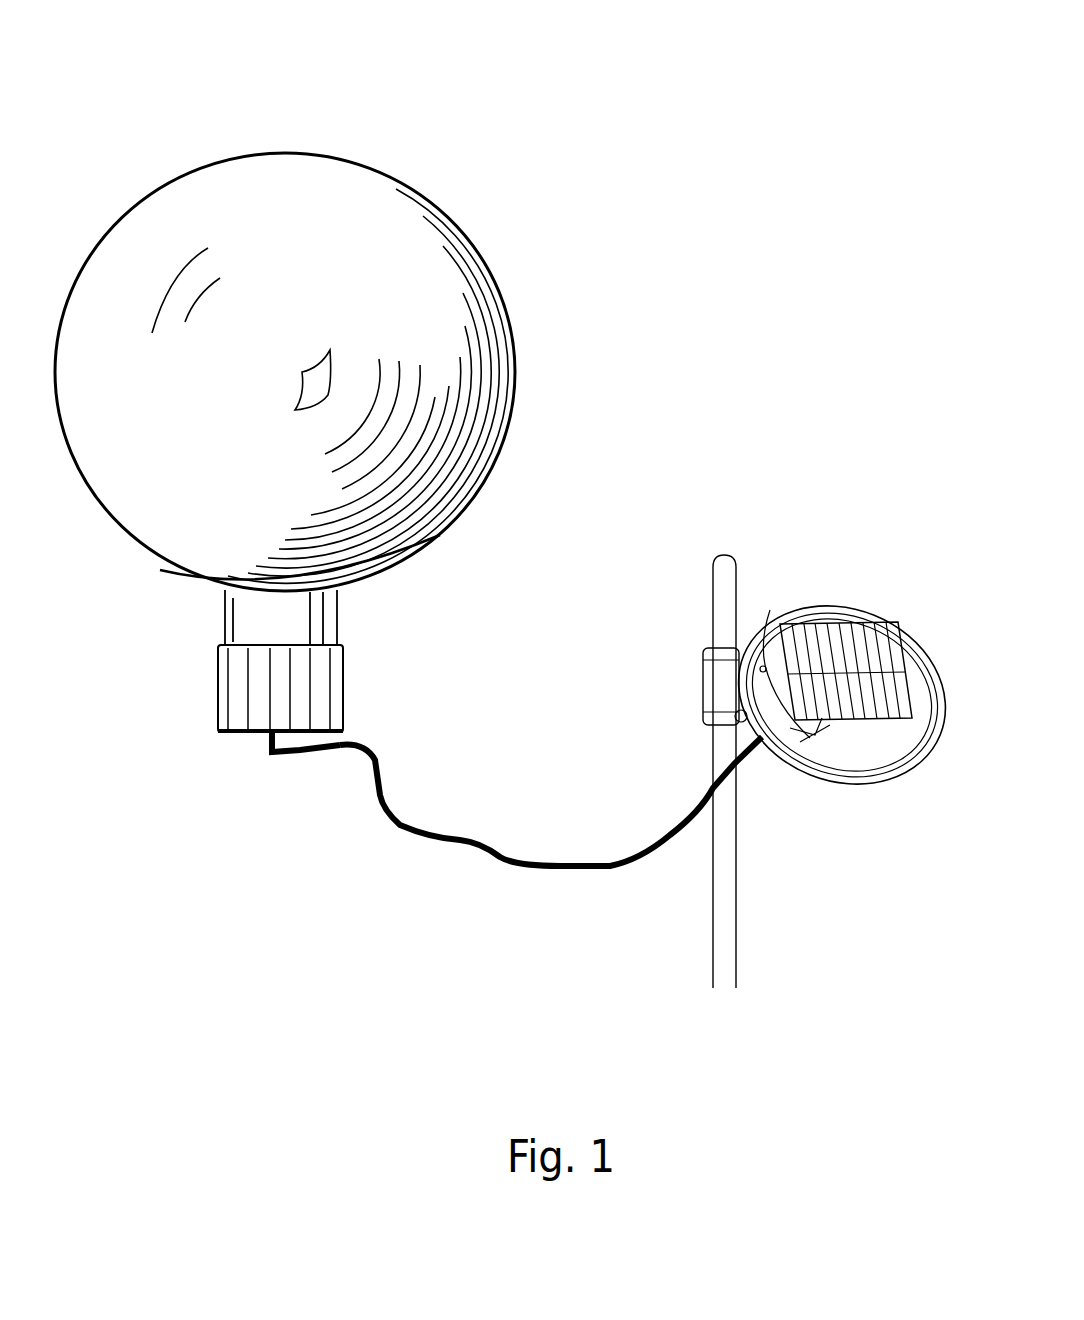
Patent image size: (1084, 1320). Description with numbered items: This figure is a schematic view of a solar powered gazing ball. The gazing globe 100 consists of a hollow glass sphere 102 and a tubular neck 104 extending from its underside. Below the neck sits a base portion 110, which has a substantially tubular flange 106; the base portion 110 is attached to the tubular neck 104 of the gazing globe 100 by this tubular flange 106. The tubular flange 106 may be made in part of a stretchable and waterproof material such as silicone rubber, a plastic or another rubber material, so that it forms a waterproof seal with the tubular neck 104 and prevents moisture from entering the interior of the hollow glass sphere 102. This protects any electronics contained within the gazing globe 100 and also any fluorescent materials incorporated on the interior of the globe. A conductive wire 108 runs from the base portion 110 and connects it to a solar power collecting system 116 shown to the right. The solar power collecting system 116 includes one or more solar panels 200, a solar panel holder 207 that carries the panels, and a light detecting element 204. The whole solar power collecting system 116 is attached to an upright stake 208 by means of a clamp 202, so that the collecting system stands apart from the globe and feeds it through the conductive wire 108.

The gazing globe 100 is at (415, 148).
The hollow glass sphere 102 is at (505, 272).
The tubular neck 104 is at (340, 612).
The tubular flange 106 is at (208, 697).
The conductive wire 108 is at (535, 878).
The base portion 110 is at (263, 763).
The solar power collecting system 116 is at (863, 442).
The solar panel 200 is at (885, 712).
The clamp 202 is at (688, 663).
The light detecting element 204 is at (757, 656).
The solar panel holder 207 is at (863, 580).
The stake 208 is at (688, 950).